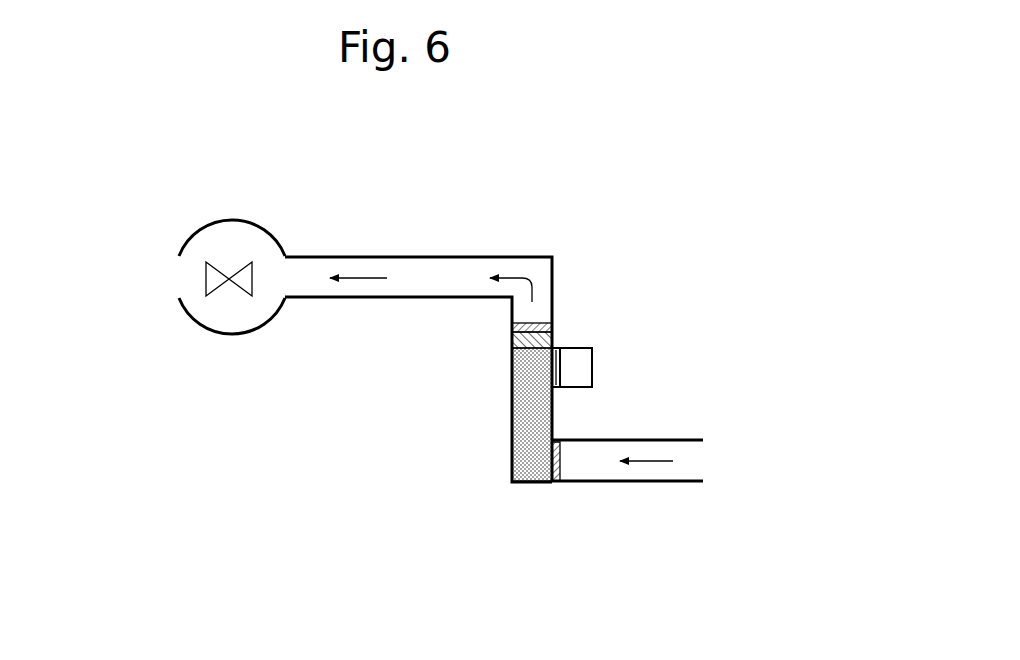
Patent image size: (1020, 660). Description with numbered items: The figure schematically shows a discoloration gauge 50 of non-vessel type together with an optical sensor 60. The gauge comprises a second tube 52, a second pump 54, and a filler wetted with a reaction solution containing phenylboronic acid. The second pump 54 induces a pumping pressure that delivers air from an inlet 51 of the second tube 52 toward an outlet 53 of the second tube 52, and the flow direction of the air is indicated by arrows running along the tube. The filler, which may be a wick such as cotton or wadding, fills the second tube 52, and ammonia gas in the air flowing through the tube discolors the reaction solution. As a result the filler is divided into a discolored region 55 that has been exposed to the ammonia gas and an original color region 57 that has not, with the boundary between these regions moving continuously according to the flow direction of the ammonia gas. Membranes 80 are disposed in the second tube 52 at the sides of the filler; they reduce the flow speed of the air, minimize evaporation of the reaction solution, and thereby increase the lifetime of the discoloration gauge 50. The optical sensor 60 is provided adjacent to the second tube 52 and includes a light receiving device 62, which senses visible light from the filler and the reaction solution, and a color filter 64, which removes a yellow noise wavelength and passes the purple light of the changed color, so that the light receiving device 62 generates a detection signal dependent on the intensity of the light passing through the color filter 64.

The discoloration gauge 50 is at (559, 208).
The inlet 51 is at (702, 463).
The second tube 52 is at (227, 336).
The outlet 53 is at (189, 317).
The second pump 54 is at (206, 268).
The discolored region 55 is at (512, 337).
The original color region 57 is at (524, 420).
The optical sensor 60 is at (633, 386).
The light receiving device 62 is at (585, 366).
The color filter 64 is at (556, 383).
The membranes 80 is at (553, 327).